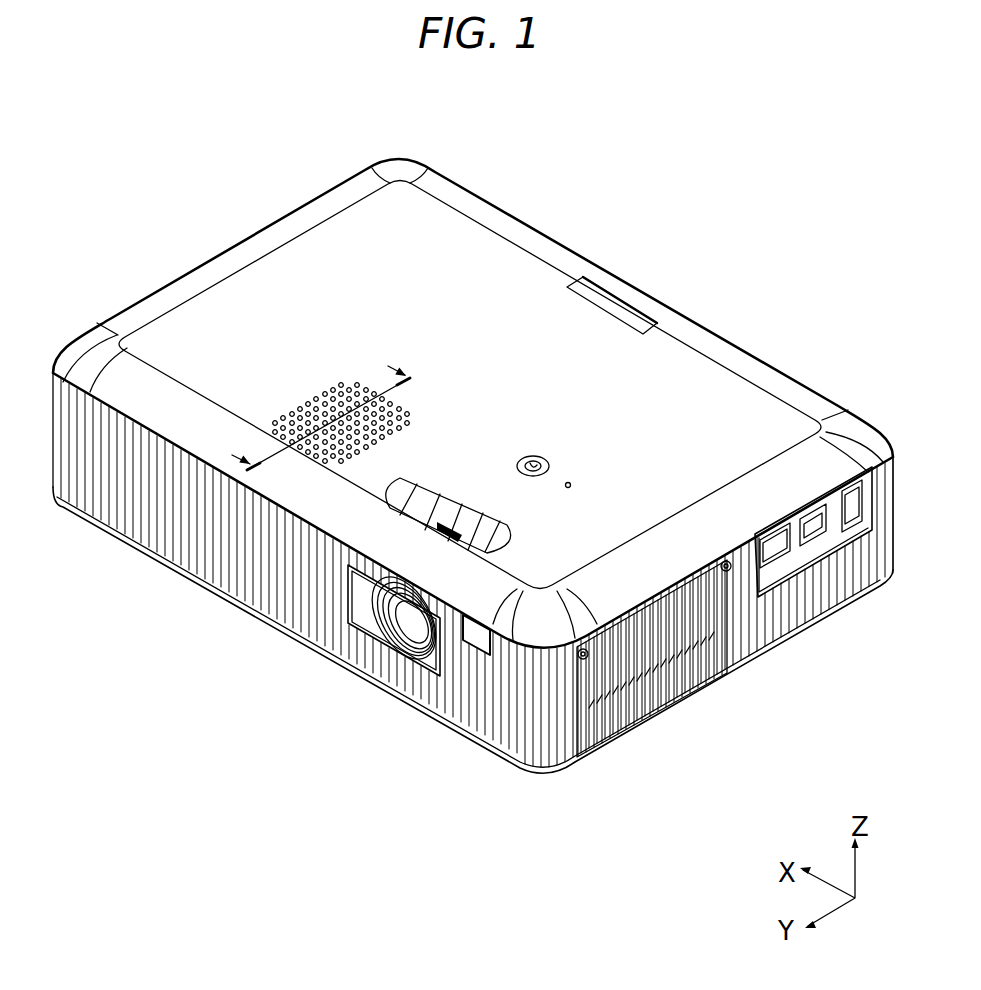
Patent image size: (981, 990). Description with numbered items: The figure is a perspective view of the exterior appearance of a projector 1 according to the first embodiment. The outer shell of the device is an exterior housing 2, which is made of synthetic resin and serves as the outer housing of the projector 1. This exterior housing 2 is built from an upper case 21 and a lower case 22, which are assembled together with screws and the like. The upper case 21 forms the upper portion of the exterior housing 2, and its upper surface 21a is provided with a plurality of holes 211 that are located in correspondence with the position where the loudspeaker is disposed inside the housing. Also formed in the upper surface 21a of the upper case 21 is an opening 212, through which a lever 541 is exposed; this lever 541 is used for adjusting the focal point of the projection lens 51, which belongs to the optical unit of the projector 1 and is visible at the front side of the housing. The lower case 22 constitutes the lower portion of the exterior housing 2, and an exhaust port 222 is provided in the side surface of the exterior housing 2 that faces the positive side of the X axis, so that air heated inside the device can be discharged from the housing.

The projector 1 is at (713, 228).
The exterior housing 2 is at (466, 248).
The upper case 21 is at (228, 313).
The upper surface 21a is at (277, 268).
The holes 211 is at (281, 410).
The opening 212 is at (500, 527).
The lower case 22 is at (538, 748).
The exhaust port 222 is at (648, 688).
The projection lens 51 is at (413, 618).
The lever 541 is at (462, 510).